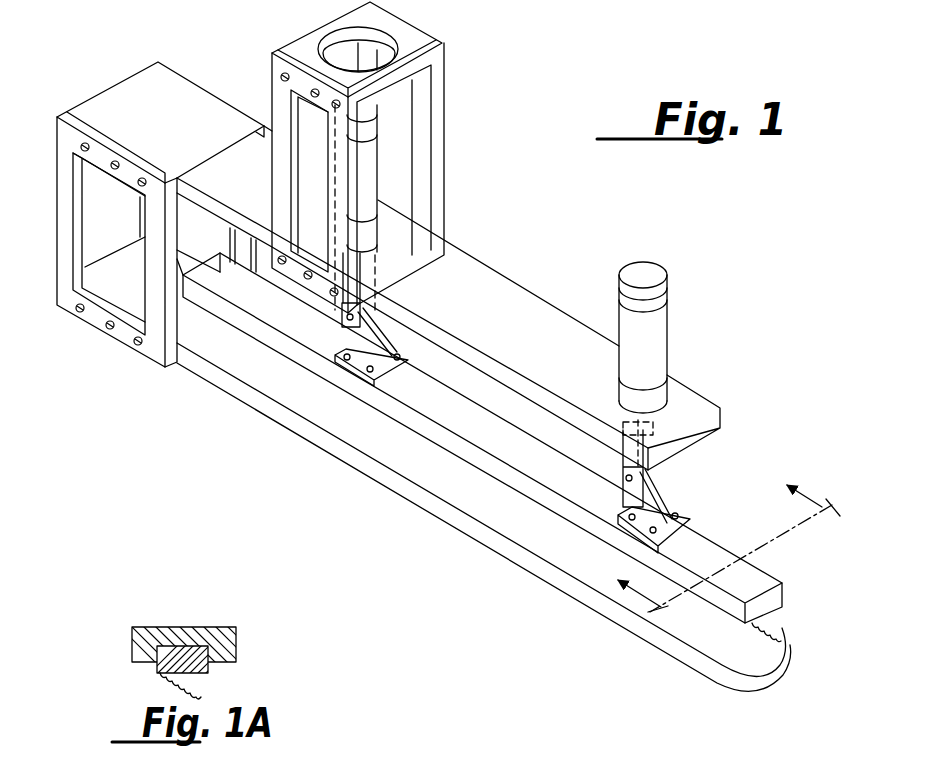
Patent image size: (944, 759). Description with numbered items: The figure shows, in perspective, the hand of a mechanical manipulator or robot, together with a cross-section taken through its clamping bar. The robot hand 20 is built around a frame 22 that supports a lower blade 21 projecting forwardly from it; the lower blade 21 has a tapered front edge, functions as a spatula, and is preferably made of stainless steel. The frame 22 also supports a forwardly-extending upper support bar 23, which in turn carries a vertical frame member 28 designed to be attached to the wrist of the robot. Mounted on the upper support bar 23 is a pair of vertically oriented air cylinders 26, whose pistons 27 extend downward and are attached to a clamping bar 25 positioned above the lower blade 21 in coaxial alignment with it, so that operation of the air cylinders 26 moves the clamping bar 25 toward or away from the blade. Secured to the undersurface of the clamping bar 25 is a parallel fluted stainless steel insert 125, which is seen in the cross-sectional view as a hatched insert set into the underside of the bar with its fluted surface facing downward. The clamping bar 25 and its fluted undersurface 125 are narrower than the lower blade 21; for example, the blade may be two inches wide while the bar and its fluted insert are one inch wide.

In FIG. 1, the robot hand 20 is at (328, 504).
In FIG. 1, the lower blade 21 is at (493, 513).
In FIG. 1, the frame 22 is at (63, 262).
In FIG. 1, the upper support bar 23 is at (490, 305).
In FIG. 1, the clamping bar 25 is at (708, 560).
In FIG. 1, the air cylinders 26 is at (368, 168).
In FIG. 1, the pistons 27 is at (355, 250).
In FIG. 1, the vertical frame member 28 is at (408, 52).
In FIG. 1, the fluted stainless steel insert 125 is at (778, 622).
In FIG. 1A, the fluted stainless steel insert 125 is at (208, 662).